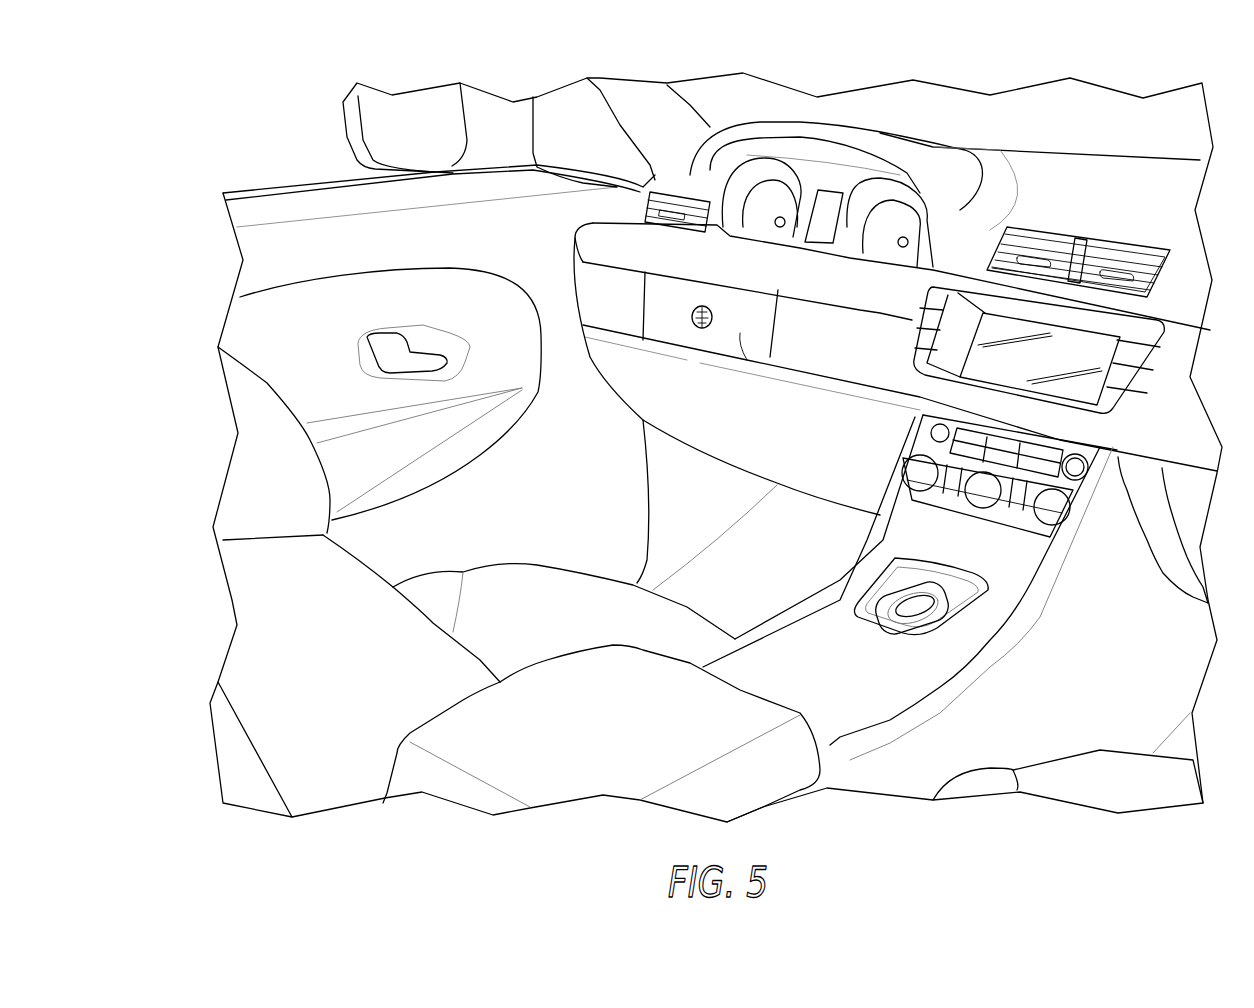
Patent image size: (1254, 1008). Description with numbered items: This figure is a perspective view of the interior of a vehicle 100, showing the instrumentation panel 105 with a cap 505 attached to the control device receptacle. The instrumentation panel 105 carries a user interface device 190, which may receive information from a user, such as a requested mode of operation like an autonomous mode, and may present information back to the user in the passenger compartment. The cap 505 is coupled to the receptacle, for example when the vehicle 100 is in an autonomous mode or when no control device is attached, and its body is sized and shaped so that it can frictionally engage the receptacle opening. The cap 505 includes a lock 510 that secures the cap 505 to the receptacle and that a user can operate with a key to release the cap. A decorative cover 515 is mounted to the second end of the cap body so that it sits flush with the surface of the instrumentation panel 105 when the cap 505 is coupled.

The vehicle 100 is at (125, 140).
The instrumentation panel 105 is at (1002, 193).
The user interface device 190 is at (1046, 369).
The cap 505 is at (650, 345).
The lock 510 is at (690, 314).
The decorative cover 515 is at (747, 333).